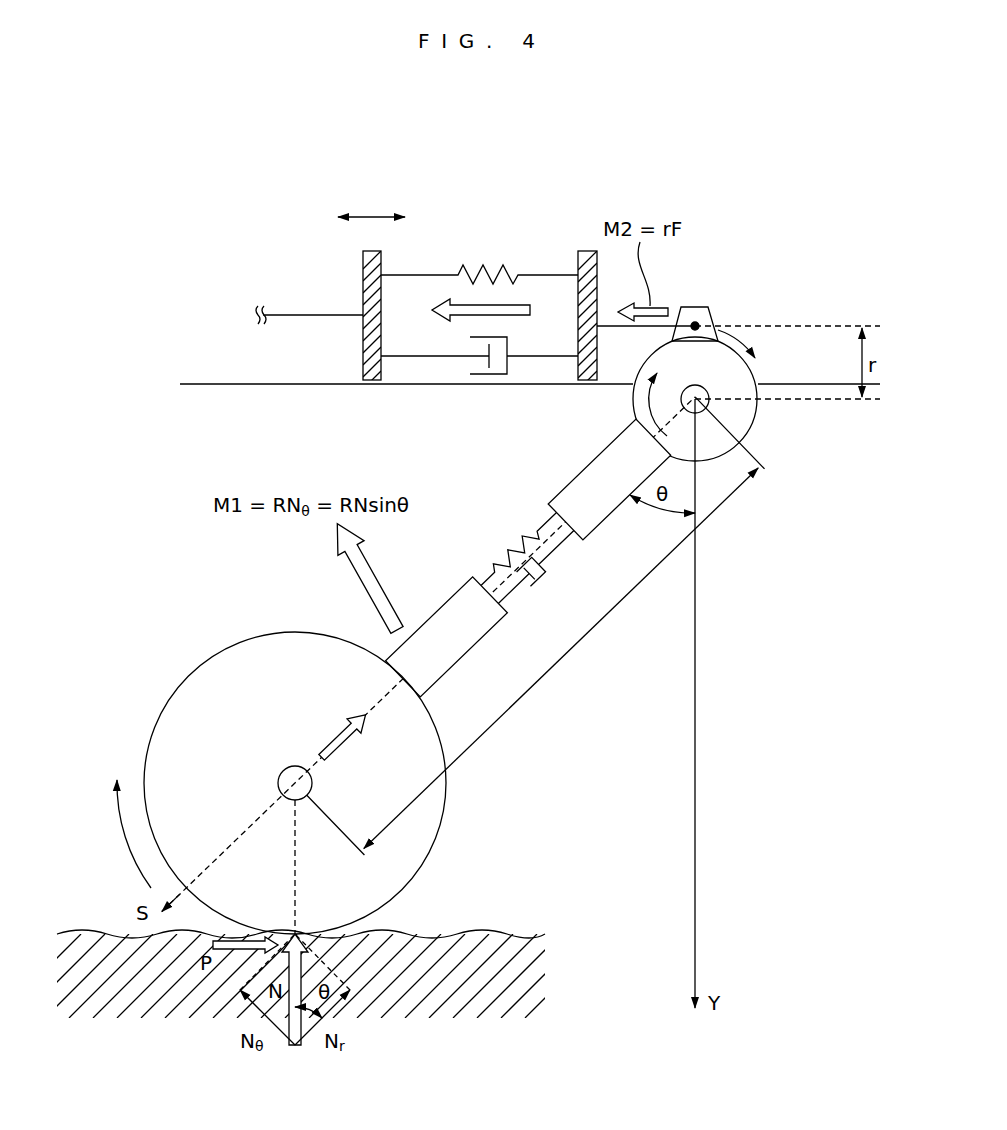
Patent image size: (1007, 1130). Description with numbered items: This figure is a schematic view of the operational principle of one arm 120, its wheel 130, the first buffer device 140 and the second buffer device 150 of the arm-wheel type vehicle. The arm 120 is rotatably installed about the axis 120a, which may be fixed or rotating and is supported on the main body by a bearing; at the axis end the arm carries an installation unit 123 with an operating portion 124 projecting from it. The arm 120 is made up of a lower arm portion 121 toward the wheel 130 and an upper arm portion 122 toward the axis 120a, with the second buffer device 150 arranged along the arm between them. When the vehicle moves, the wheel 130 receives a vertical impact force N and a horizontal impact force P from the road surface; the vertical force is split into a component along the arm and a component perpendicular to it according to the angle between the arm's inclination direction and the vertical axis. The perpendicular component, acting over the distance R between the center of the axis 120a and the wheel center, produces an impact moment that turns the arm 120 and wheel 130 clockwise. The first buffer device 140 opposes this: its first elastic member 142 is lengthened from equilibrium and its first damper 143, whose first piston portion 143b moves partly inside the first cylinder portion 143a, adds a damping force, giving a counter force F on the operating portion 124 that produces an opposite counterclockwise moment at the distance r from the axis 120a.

The arm 120 is at (456, 683).
The axis 120a is at (710, 406).
The lower arm portion 121 is at (455, 655).
The upper arm portion 122 is at (593, 522).
The installation unit 123 is at (752, 384).
The operating portion 124 is at (708, 316).
The wheel 130 is at (178, 698).
The first buffer device 140 is at (465, 240).
The first elastic member 142 is at (492, 268).
The first damper 143 is at (479, 405).
The first cylinder portion 143a is at (524, 385).
The first piston portion 143b is at (428, 357).
The second buffer device 150 is at (544, 591).